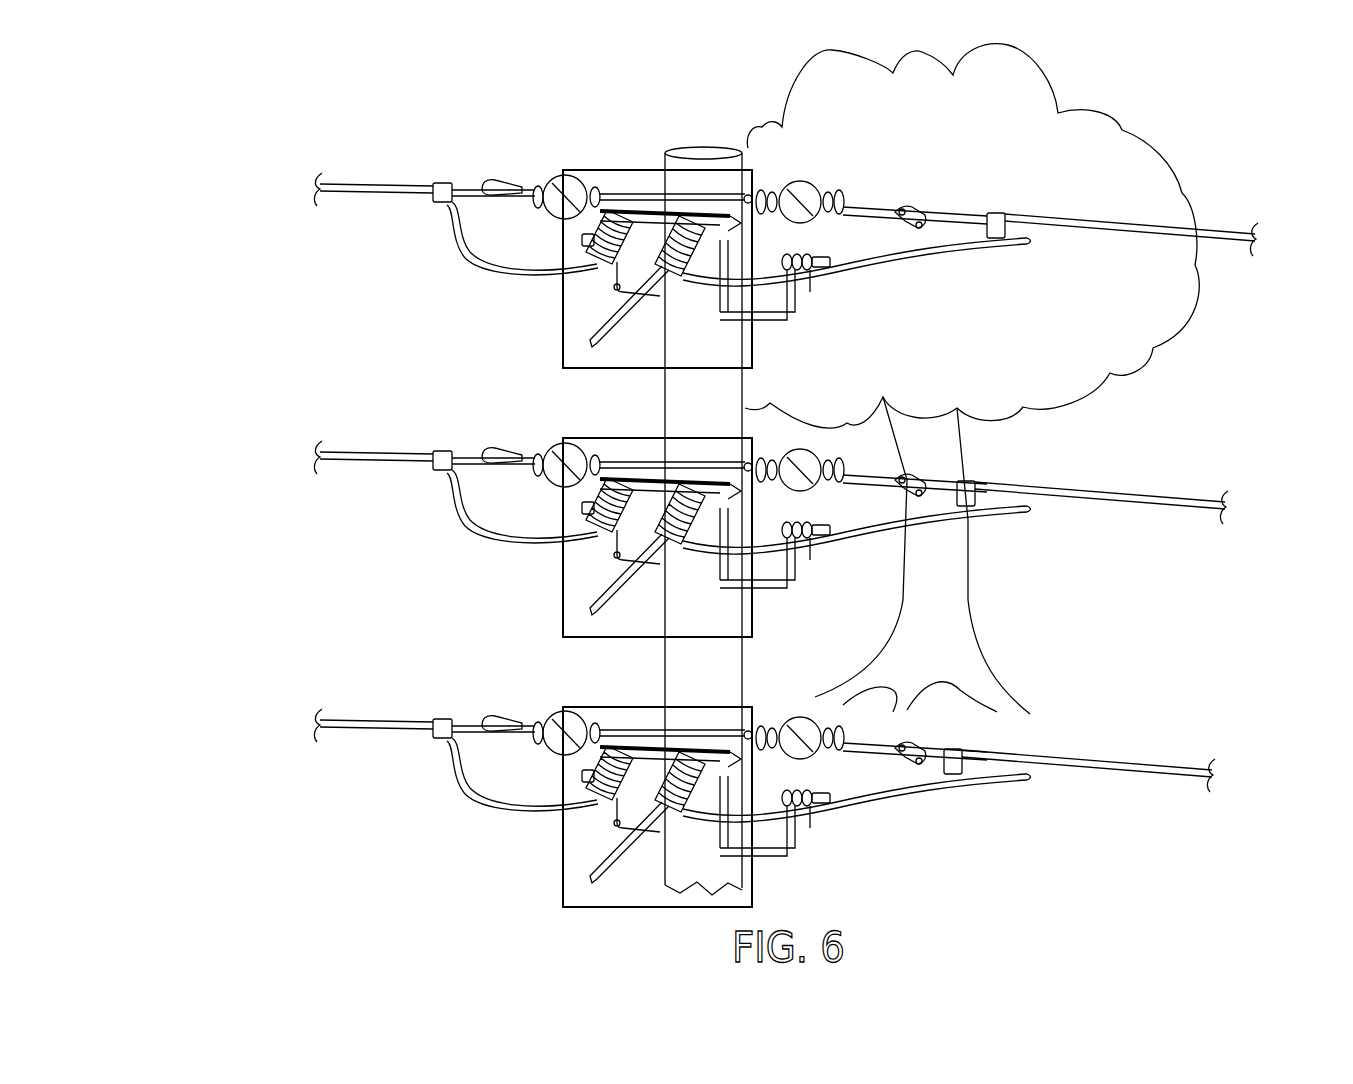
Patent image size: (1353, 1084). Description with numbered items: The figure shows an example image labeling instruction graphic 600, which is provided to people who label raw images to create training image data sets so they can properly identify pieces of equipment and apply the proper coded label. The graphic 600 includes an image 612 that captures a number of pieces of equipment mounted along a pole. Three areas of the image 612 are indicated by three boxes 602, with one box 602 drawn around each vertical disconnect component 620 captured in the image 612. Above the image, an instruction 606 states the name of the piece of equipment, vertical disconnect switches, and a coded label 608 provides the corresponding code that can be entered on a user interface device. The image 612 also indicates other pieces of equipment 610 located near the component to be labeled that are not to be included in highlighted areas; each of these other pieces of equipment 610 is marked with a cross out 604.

The image labeling instruction graphic 600 is at (1236, 44).
The box 602 is at (563, 302).
The cross out 604 is at (537, 187).
The instruction 606 is at (350, 68).
The coded label 608 is at (190, 112).
The other pieces of equipment 610 is at (558, 177).
The image 612 is at (210, 502).
The vertical disconnect component 620 is at (620, 211).